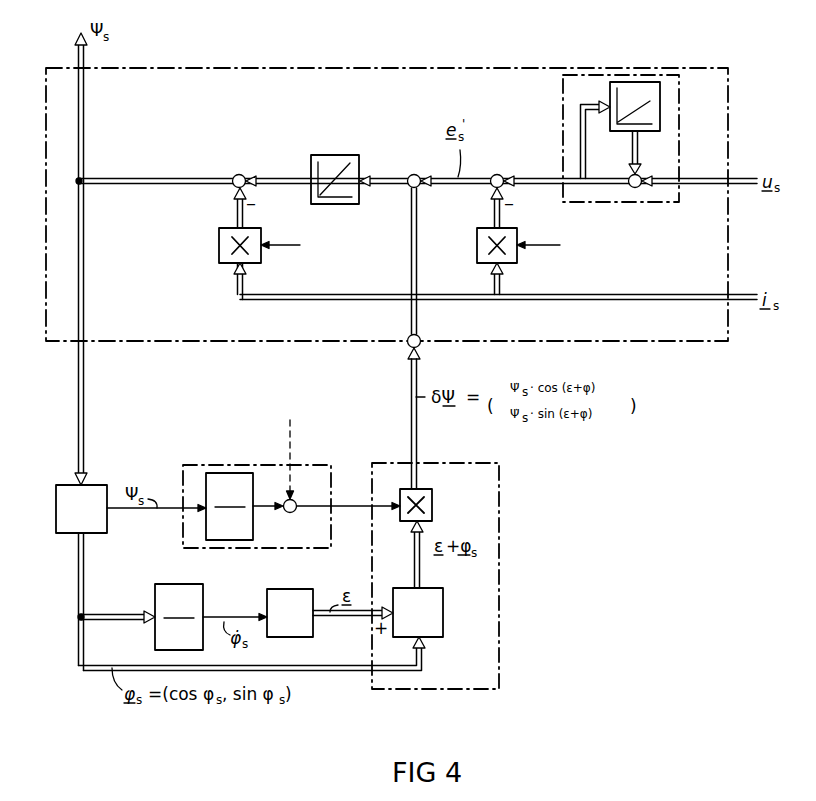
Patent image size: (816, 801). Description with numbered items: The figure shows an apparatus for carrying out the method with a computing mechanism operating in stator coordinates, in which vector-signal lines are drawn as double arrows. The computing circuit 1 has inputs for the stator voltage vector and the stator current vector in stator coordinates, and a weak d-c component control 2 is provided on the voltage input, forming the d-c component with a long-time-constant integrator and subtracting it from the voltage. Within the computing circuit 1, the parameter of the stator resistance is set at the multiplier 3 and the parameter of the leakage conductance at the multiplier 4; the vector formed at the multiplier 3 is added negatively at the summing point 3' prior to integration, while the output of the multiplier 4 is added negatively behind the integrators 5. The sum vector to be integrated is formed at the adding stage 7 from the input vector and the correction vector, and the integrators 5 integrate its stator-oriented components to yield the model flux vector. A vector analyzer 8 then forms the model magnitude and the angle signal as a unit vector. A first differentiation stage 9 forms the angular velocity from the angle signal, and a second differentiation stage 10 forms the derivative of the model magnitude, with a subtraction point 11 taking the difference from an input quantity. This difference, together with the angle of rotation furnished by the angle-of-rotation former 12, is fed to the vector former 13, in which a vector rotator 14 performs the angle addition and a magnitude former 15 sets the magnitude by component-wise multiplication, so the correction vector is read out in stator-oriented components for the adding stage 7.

The computing circuit 1 is at (728, 118).
The d-c component control 2 is at (679, 118).
The multiplier 3 is at (515, 241).
The subtraction point for resistive voltage drop 3' is at (505, 165).
The multiplier 4 is at (219, 247).
The integrators 5 is at (336, 155).
The adding stage 7 is at (416, 173).
The vector analyzer 8 is at (56, 514).
The first differentiation stage 9 is at (155, 645).
The second differentiation stage 10 is at (183, 548).
The subtraction point 11 is at (295, 500).
The angle-of-rotation former 12 is at (305, 637).
The vector former 13 is at (535, 515).
The vector rotator 14 is at (443, 617).
The magnitude former 15 is at (432, 502).